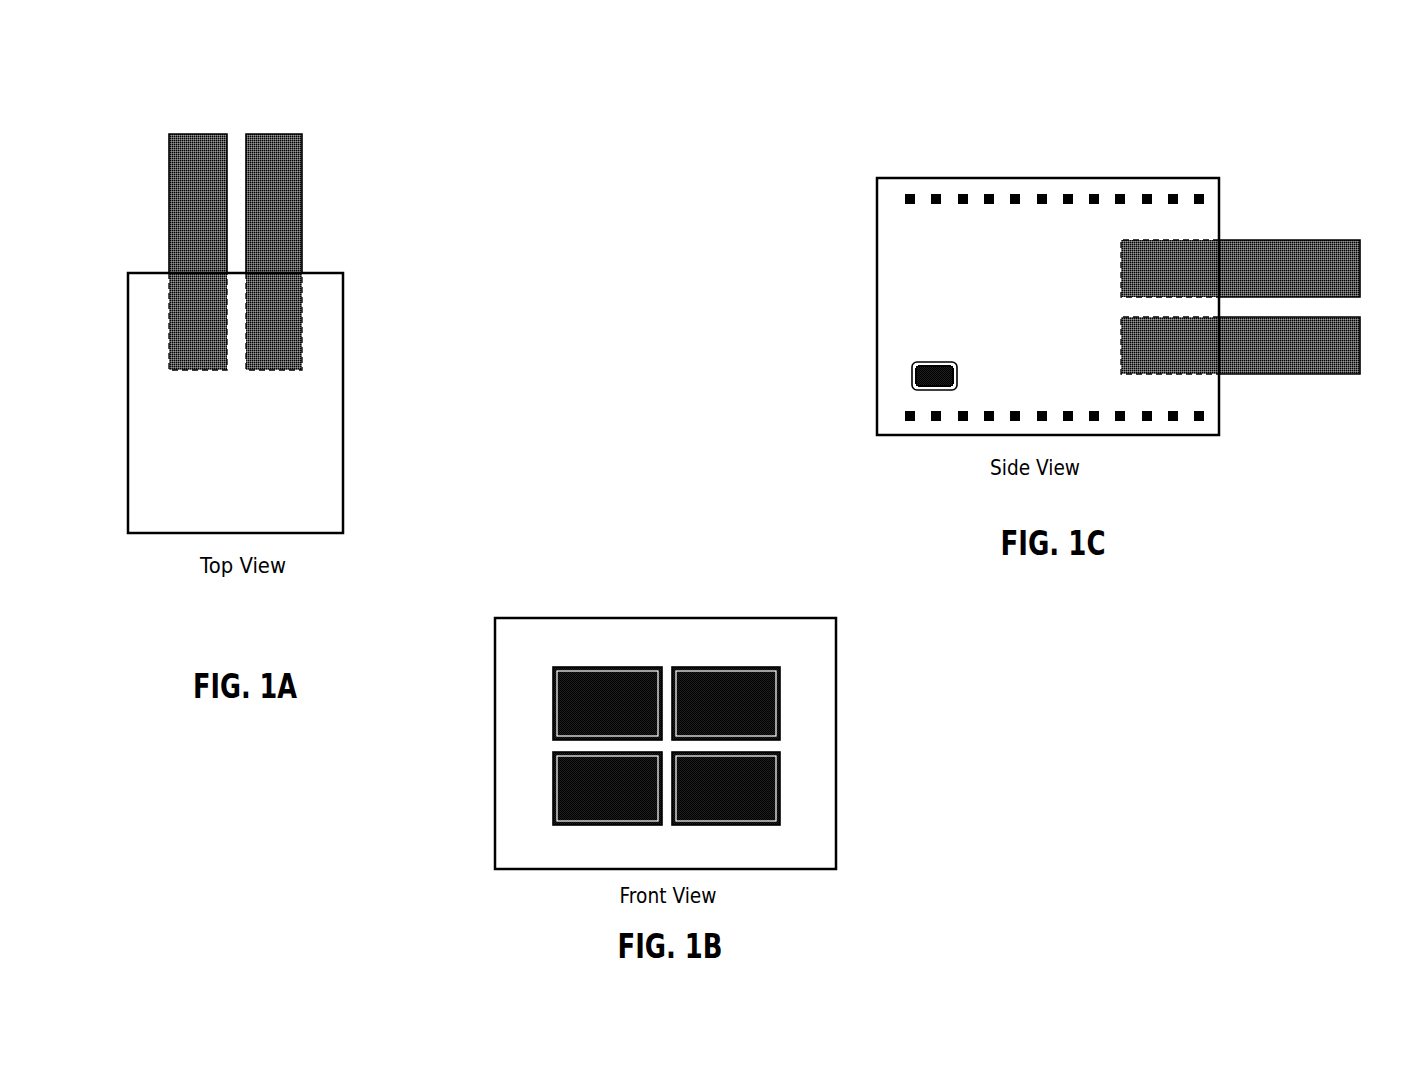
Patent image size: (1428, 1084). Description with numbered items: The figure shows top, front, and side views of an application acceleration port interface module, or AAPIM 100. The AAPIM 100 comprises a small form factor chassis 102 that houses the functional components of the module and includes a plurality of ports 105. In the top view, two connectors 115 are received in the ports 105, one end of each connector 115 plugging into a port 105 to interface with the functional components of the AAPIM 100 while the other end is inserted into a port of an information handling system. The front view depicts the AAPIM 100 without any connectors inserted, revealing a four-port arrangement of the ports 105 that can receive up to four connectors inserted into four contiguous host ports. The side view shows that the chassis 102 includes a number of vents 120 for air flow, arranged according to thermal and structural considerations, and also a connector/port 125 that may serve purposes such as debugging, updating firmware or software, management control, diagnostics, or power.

In FIG. 1A, the application acceleration port interface module 100 is at (424, 161).
In FIG. 1B, the application acceleration port interface module 100 is at (640, 600).
In FIG. 1C, the application acceleration port interface module 100 is at (860, 134).
In FIG. 1A, the small form factor chassis 102 is at (347, 352).
In FIG. 1B, the small form factor chassis 102 is at (838, 645).
In FIG. 1C, the small form factor chassis 102 is at (875, 273).
In FIG. 1A, the ports 105 is at (242, 373).
In FIG. 1B, the ports 105 is at (545, 658).
In FIG. 1C, the ports 105 is at (1113, 233).
In FIG. 1A, the connectors 115 is at (310, 123).
In FIG. 1C, the connectors 115 is at (1288, 270).
In FIG. 1C, the vents 120 is at (937, 207).
In FIG. 1C, the connectors/ports 125 is at (957, 367).